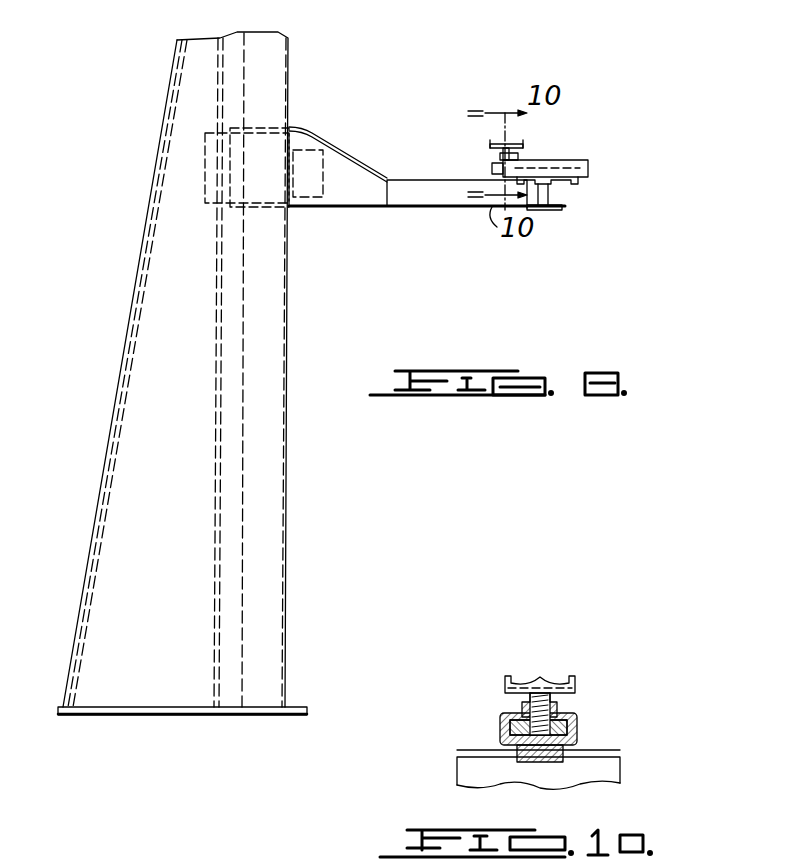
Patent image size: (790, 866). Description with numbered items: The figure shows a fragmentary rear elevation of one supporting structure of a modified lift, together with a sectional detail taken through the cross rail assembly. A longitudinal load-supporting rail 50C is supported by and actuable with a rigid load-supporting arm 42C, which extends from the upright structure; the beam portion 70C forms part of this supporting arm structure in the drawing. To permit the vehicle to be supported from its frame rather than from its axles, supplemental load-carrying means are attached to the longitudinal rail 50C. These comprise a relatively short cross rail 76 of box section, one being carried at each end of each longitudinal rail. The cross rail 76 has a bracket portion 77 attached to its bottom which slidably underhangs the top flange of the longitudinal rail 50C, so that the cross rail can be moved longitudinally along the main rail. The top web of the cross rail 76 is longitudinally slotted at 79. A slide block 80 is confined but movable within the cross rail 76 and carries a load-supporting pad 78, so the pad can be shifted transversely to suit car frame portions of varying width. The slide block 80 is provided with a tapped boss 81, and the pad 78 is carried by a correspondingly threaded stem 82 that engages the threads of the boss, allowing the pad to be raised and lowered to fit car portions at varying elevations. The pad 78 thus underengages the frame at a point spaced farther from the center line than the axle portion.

In FIG. 9, the rigid load-supporting arm 42C is at (366, 206).
In FIG. 9, the longitudinal load-supporting rail 50C is at (565, 208).
In FIG. 10, the longitudinal load-supporting rail 50C is at (470, 763).
In FIG. 9, the supporting arm beam 70C is at (443, 180).
In FIG. 9, the cross rail 76 is at (588, 172).
In FIG. 10, the cross rail 76 is at (578, 736).
In FIG. 9, the bracket portion 77 is at (573, 183).
In FIG. 10, the bracket portion 77 is at (500, 748).
In FIG. 9, the load-supporting pad 78 is at (515, 145).
In FIG. 10, the load-supporting pad 78 is at (538, 680).
In FIG. 10, the longitudinal slot 79 is at (560, 716).
In FIG. 10, the slide block 80 is at (512, 723).
In FIG. 10, the tapped boss 81 is at (520, 708).
In FIG. 9, the threaded stem 82 is at (512, 154).
In FIG. 10, the threaded stem 82 is at (565, 695).